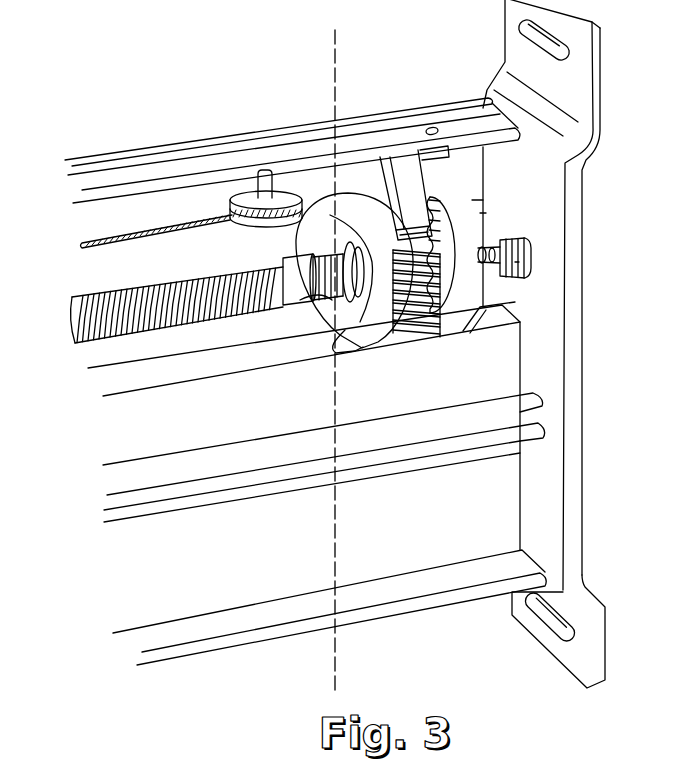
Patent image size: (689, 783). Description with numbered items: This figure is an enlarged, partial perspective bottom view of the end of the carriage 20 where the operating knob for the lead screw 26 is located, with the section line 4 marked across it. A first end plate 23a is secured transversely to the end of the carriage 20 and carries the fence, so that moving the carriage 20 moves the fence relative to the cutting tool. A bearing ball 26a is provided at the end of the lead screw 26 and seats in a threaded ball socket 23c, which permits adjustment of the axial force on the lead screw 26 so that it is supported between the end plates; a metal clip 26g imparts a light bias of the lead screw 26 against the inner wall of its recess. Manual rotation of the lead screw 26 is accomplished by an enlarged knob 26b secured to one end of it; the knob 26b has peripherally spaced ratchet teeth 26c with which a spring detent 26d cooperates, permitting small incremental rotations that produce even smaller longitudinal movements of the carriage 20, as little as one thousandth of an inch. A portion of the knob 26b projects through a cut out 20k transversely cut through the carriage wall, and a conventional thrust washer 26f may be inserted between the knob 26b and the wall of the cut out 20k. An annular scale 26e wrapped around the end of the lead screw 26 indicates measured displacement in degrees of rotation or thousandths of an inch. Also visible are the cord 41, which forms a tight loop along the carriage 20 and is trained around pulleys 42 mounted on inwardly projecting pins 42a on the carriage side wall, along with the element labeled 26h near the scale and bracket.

The section line 4- 4 is at (333, 37).
The carriage 20 is at (160, 128).
The cut out 20k is at (480, 311).
The first end plate 23a is at (583, 363).
The threaded ball socket 23c is at (519, 262).
The lead screw 26 is at (183, 278).
The bearing ball 26a is at (493, 247).
The knob 26b is at (353, 300).
The ratchet teeth 26c is at (393, 247).
The spring detent 26d is at (403, 195).
The annular scale 26e is at (474, 202).
The thrust washer 26f is at (390, 268).
The metal clip 26g is at (285, 258).
The mount plate tab 26h is at (485, 212).
The cord 41 is at (97, 243).
The pulleys 42 is at (283, 195).
The pins 42a is at (250, 183).